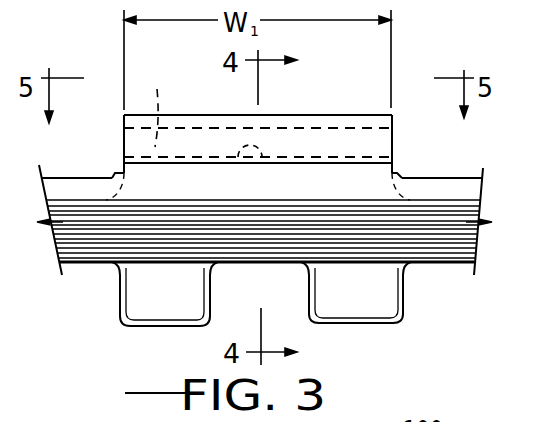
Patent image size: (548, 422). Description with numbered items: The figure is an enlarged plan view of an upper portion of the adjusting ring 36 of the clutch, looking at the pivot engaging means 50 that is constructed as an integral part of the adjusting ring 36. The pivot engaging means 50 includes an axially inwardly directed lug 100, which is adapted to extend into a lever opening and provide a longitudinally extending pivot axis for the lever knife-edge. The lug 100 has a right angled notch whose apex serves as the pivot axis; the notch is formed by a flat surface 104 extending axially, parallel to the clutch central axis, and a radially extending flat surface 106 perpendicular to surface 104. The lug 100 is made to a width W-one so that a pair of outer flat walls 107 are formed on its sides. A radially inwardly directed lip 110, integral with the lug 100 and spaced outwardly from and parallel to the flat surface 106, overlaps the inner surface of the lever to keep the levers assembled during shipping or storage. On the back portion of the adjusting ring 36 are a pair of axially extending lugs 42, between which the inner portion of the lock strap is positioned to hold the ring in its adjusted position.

The adjusting ring 36 is at (441, 188).
The axially extending lugs 42 is at (137, 303).
The pivot engaging means 50 is at (289, 107).
The lug 100 is at (309, 140).
The flat surface 104 is at (156, 105).
The radially extending flat surface 106 is at (238, 157).
The outer flat walls 107 is at (124, 140).
The radially inwardly directed lip 110 is at (205, 126).